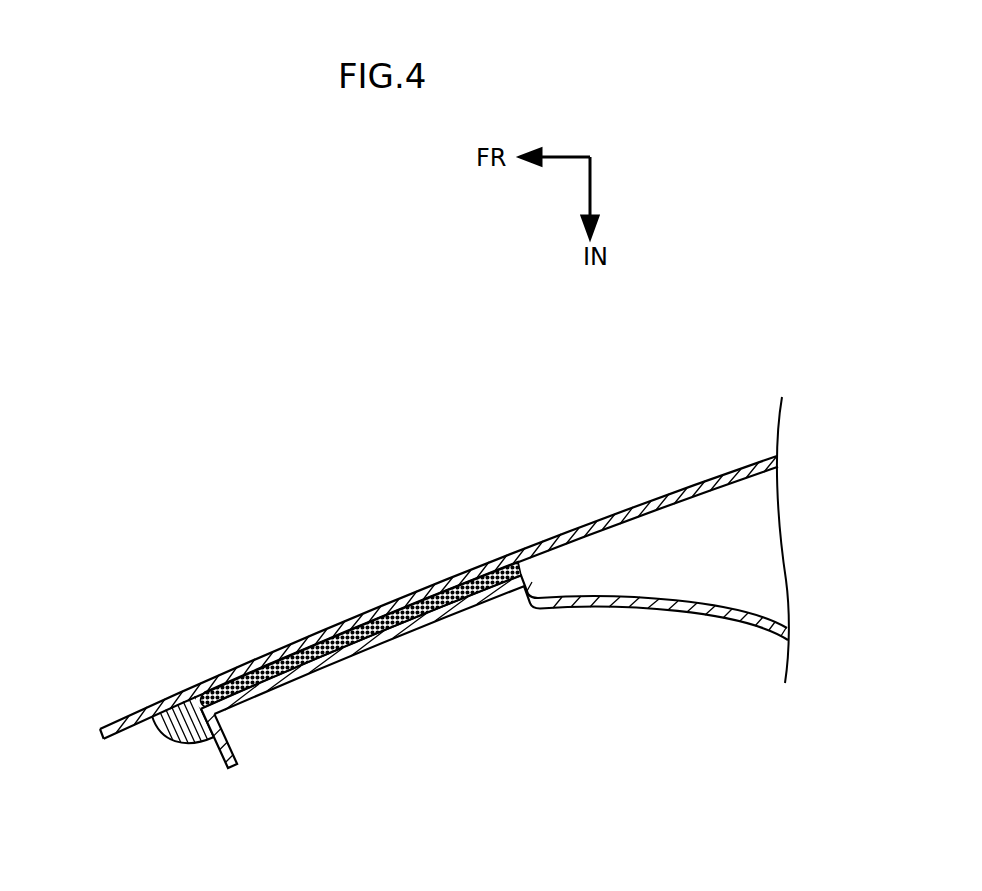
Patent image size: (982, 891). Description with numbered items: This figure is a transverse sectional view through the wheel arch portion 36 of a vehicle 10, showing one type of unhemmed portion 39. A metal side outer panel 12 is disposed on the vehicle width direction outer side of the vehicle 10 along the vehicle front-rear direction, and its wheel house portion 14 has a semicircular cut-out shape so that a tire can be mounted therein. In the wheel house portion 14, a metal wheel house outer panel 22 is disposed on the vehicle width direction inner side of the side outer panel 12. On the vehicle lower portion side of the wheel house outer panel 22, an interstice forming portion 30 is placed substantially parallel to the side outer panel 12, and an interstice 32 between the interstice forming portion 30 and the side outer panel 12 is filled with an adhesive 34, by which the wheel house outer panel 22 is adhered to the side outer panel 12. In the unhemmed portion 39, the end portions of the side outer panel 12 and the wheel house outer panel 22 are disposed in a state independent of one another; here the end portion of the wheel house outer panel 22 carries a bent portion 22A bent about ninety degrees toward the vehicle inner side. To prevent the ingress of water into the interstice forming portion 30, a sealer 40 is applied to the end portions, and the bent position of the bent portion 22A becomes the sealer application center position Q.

The vehicle 10 is at (600, 401).
The side outer panel 12 is at (473, 569).
The wheel house portion 14 is at (197, 618).
The wheel house outer panel 22 is at (470, 610).
The bent portion 22A is at (236, 744).
The interstice forming portion 30 is at (403, 631).
The interstice 32 is at (412, 606).
The adhesive 34 is at (345, 630).
The wheel arch portion 36 is at (217, 665).
The unhemmed portion 39 is at (210, 775).
The sealer 40 is at (172, 741).
The sealer application center position Q is at (178, 700).